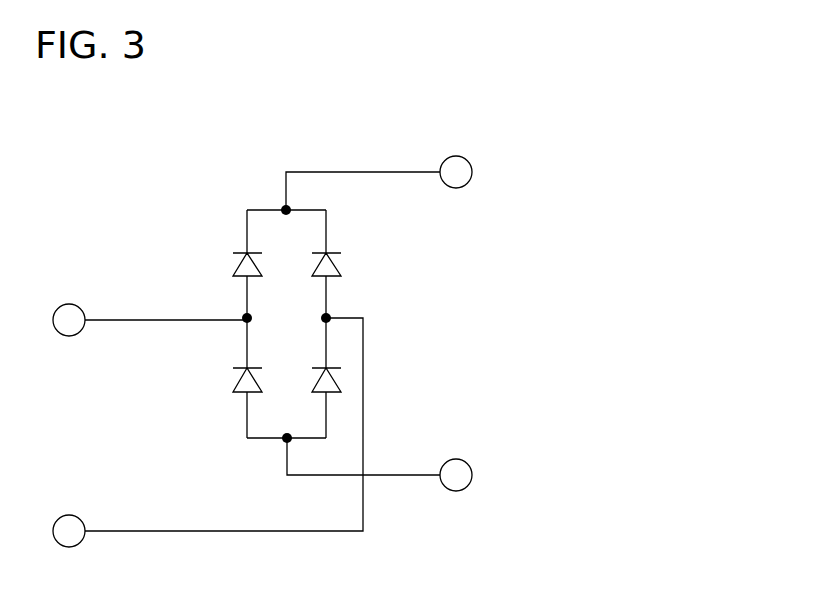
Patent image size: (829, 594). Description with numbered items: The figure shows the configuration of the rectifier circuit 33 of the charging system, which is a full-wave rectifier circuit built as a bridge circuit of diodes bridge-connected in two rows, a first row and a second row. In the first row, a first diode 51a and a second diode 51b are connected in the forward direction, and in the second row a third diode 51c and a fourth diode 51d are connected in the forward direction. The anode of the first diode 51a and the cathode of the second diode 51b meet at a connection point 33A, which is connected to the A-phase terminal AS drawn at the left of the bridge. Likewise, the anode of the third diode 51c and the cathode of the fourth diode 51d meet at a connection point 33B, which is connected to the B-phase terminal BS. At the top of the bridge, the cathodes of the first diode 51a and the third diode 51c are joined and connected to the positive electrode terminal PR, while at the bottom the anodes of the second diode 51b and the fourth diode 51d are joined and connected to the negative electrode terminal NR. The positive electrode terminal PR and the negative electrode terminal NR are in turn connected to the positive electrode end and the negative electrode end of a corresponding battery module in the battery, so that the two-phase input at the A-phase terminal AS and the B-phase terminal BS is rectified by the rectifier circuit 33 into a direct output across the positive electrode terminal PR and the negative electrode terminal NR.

The rectifier circuit 33 is at (538, 199).
The connection point 33A is at (245, 315).
The connection point 33B is at (328, 315).
The first diode 51a is at (236, 251).
The second diode 51b is at (238, 367).
The third diode 51c is at (333, 252).
The fourth diode 51d is at (334, 367).
The A-phase terminal AS is at (72, 304).
The B-phase terminal BS is at (72, 515).
The positive electrode terminal PR is at (456, 156).
The negative electrode terminal NR is at (456, 459).